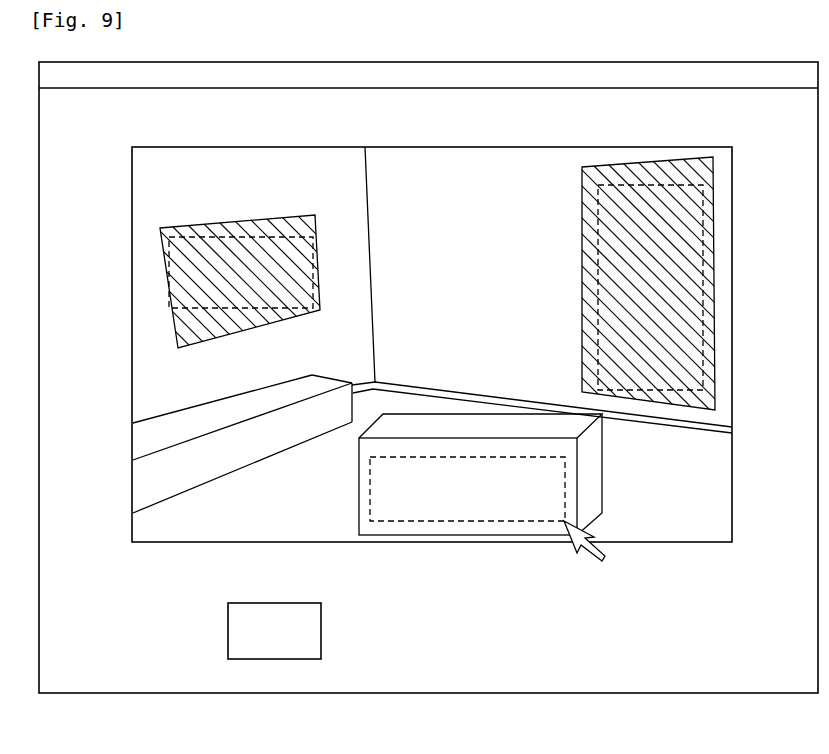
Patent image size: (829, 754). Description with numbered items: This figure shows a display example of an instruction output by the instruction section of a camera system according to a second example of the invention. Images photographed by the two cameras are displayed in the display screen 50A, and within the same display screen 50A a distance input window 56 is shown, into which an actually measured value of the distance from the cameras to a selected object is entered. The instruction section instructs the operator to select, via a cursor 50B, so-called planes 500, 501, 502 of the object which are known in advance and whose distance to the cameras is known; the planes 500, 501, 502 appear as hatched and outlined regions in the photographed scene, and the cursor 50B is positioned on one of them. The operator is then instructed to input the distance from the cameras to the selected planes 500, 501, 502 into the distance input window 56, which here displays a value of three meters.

The display screen 50A is at (177, 693).
The cursor 50B is at (590, 560).
The distance input window 56 is at (273, 659).
The plane 500 is at (165, 248).
The plane 501 is at (585, 270).
The plane 502 is at (410, 522).